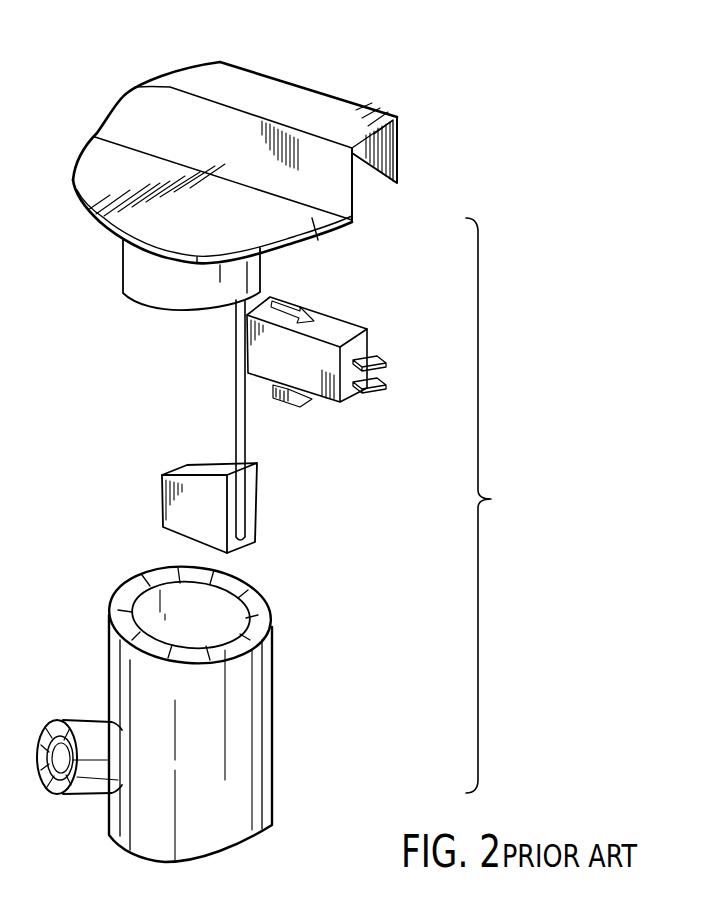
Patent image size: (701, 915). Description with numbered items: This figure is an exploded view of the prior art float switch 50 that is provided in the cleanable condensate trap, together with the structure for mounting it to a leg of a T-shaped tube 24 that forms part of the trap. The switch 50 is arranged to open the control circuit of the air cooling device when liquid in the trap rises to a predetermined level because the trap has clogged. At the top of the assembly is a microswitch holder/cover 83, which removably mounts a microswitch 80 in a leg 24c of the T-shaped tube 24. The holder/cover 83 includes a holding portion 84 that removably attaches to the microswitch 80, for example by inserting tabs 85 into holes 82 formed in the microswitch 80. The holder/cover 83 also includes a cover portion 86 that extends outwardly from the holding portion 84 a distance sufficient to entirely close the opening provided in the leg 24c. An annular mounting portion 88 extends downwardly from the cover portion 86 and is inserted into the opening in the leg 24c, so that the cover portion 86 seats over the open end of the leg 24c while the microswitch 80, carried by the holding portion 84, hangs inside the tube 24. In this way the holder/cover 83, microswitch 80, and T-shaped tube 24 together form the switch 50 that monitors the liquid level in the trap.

The holding portion 84 is at (298, 100).
The microswitch holder/cover 83 is at (364, 95).
The tabs 85 is at (403, 146).
The cover portion 86 is at (327, 243).
The annular mounting portion 88 is at (265, 265).
The microswitch 80 is at (355, 322).
The holes 82 is at (254, 367).
The switch 50 is at (136, 460).
The T-shaped tube 24 is at (286, 721).
The leg 24c is at (273, 608).